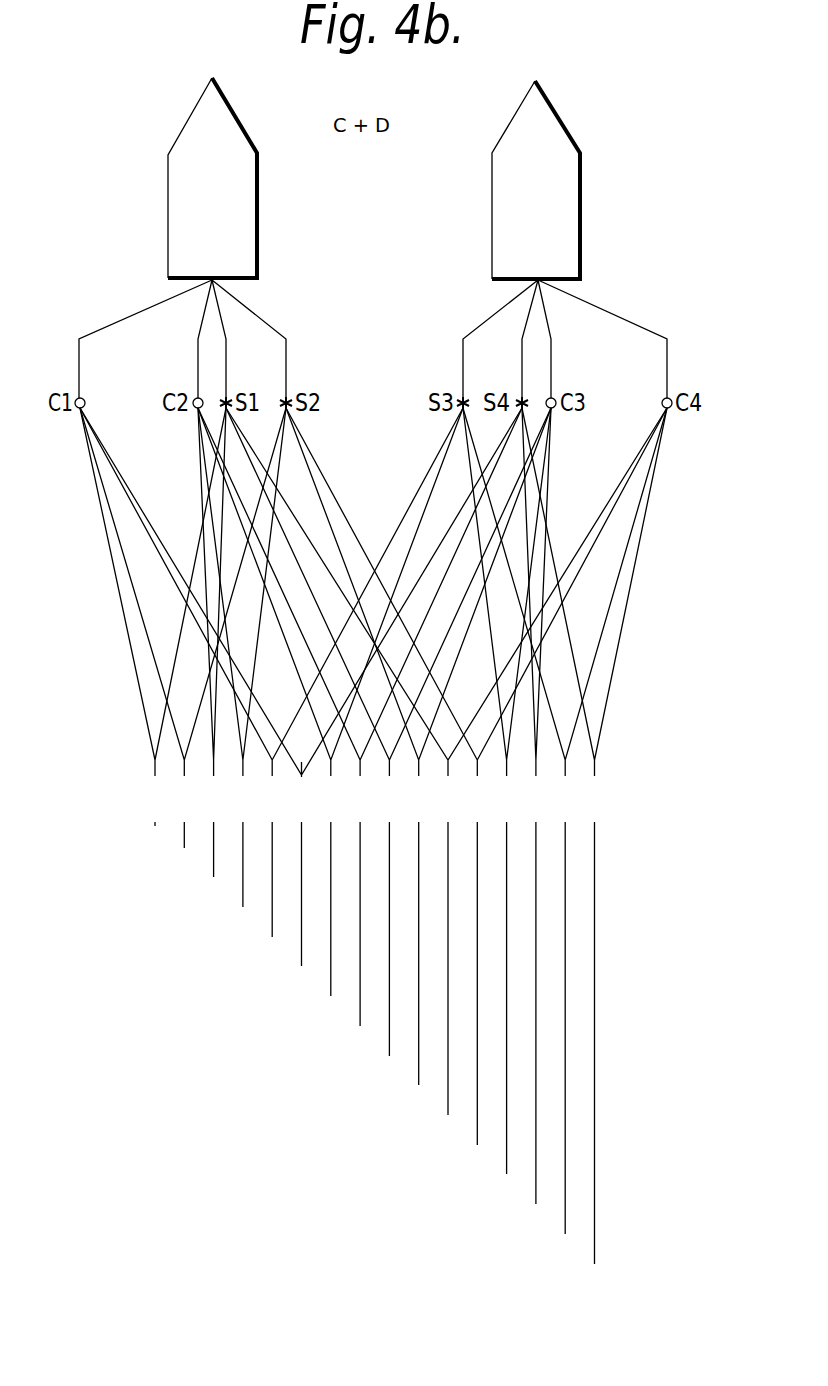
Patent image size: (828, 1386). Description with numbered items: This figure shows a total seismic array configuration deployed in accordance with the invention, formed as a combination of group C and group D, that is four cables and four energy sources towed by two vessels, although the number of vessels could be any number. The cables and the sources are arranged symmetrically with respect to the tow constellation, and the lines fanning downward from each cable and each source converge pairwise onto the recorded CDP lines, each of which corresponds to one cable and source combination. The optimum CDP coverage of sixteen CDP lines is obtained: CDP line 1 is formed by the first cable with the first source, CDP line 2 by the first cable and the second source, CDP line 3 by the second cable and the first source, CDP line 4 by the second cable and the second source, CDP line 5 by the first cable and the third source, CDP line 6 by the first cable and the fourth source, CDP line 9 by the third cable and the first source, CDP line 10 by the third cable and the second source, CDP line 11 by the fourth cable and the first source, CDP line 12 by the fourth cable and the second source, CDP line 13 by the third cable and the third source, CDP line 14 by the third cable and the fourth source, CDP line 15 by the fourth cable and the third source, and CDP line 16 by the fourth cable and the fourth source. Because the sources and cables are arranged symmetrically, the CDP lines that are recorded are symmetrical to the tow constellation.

The output node C1S1 1 is at (153, 628).
The output node C1S2 2 is at (183, 643).
The output node C2S1 3 is at (201, 657).
The output node C2S2 4 is at (242, 672).
The output node C1S3 5 is at (271, 687).
The output node C1S4 6 is at (301, 702).
The output node C3S1 9 is at (388, 747).
The output node C3S2 10 is at (418, 761).
The output node C4S1 11 is at (446, 776).
The output node C4S2 12 is at (476, 791).
The output node C3S3 13 is at (507, 806).
The output node C3S4 14 is at (524, 821).
The output node C4S3 15 is at (565, 836).
The output node C4S4 16 is at (594, 851).